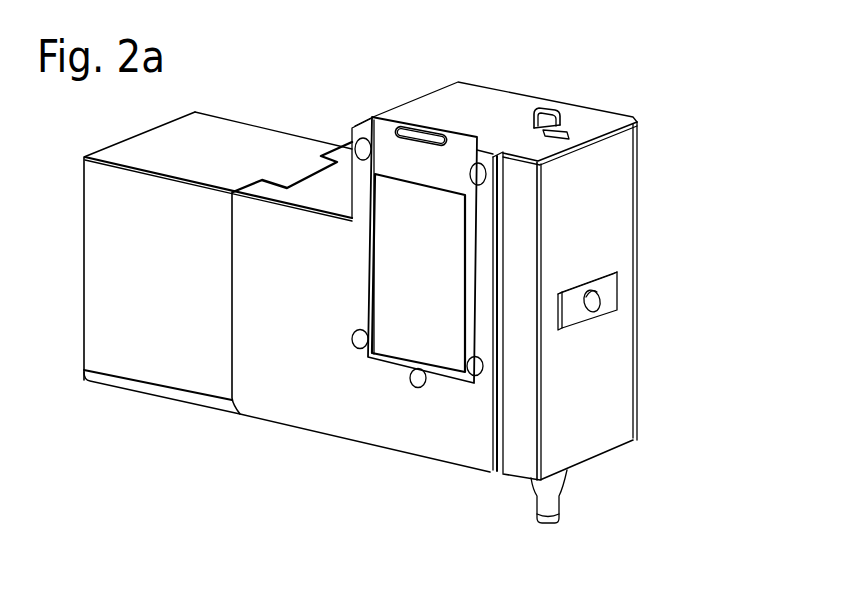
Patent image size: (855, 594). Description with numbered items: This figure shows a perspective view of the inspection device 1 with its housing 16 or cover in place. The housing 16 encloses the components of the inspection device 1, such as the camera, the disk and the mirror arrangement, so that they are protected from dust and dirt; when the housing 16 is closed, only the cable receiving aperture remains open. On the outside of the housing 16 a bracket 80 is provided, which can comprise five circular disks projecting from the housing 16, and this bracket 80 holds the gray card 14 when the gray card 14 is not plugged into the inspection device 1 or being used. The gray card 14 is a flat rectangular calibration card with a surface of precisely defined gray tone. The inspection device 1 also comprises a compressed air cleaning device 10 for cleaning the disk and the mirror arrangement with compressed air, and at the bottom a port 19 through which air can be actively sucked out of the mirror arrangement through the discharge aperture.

The inspection device 1 is at (299, 90).
The compressed air cleaning device 10 is at (553, 108).
The gray card 14 is at (374, 117).
The housing 16 is at (508, 103).
The port 19 is at (558, 512).
The bracket 80 is at (415, 417).